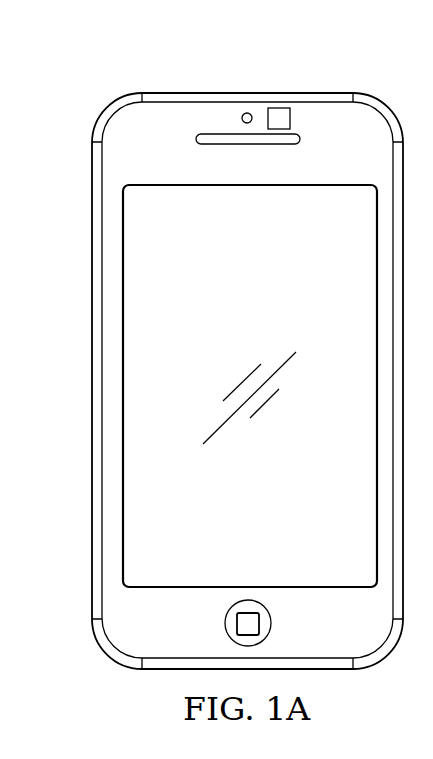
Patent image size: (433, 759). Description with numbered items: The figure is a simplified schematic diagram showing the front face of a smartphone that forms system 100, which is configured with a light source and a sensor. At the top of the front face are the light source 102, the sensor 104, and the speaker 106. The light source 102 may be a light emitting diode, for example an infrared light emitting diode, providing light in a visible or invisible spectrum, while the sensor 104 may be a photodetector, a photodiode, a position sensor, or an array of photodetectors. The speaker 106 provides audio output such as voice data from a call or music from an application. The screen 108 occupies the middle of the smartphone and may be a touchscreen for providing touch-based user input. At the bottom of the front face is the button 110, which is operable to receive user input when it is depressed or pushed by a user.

The system 100 is at (78, 58).
The light source 102 is at (245, 112).
The sensor 104 is at (278, 107).
The speaker 106 is at (196, 137).
The screen 108 is at (135, 370).
The button 110 is at (225, 623).